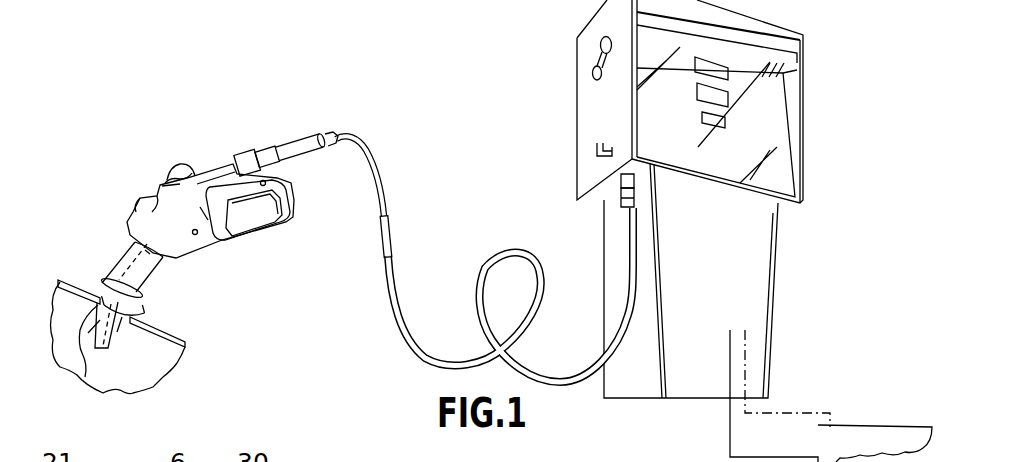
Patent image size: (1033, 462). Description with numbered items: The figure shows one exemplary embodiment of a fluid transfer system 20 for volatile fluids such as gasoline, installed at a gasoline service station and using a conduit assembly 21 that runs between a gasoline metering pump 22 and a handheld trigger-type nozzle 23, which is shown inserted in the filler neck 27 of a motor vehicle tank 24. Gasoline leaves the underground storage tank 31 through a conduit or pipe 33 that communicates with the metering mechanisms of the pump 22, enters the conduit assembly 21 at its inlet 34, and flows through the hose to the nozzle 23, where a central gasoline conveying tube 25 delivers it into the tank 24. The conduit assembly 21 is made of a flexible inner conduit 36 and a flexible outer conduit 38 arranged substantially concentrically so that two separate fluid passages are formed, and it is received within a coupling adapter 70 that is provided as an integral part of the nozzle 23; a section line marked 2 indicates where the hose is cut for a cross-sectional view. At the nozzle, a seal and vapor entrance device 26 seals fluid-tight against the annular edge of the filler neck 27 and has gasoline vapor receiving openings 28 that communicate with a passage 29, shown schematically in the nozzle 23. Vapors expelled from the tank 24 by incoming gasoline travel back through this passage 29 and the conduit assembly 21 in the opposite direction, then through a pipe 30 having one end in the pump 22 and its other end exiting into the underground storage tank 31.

The fluid transfer system 20 is at (424, 69).
The pump 22 is at (804, 115).
The coupling adapter 70 is at (617, 184).
The inlet of the conduit assembly 34 is at (611, 208).
The conduit assembly 21 is at (386, 186).
The flexible inner conduit 36 is at (389, 238).
The flexible outer conduit 38 is at (388, 290).
The trigger-type nozzle 23 is at (207, 163).
The section line 2- 2 is at (237, 187).
The passage 29 is at (165, 183).
The seal and vapor entrance device 26 is at (103, 277).
The filler neck 27 is at (142, 306).
The tank 24 is at (143, 368).
The gasoline vapor receiving openings 28 is at (63, 352).
The central gasoline conveying tube 25 is at (82, 375).
The conduit or pipe 33 is at (730, 428).
The pipe 30 is at (803, 413).
The underground storage tank 31 is at (882, 427).